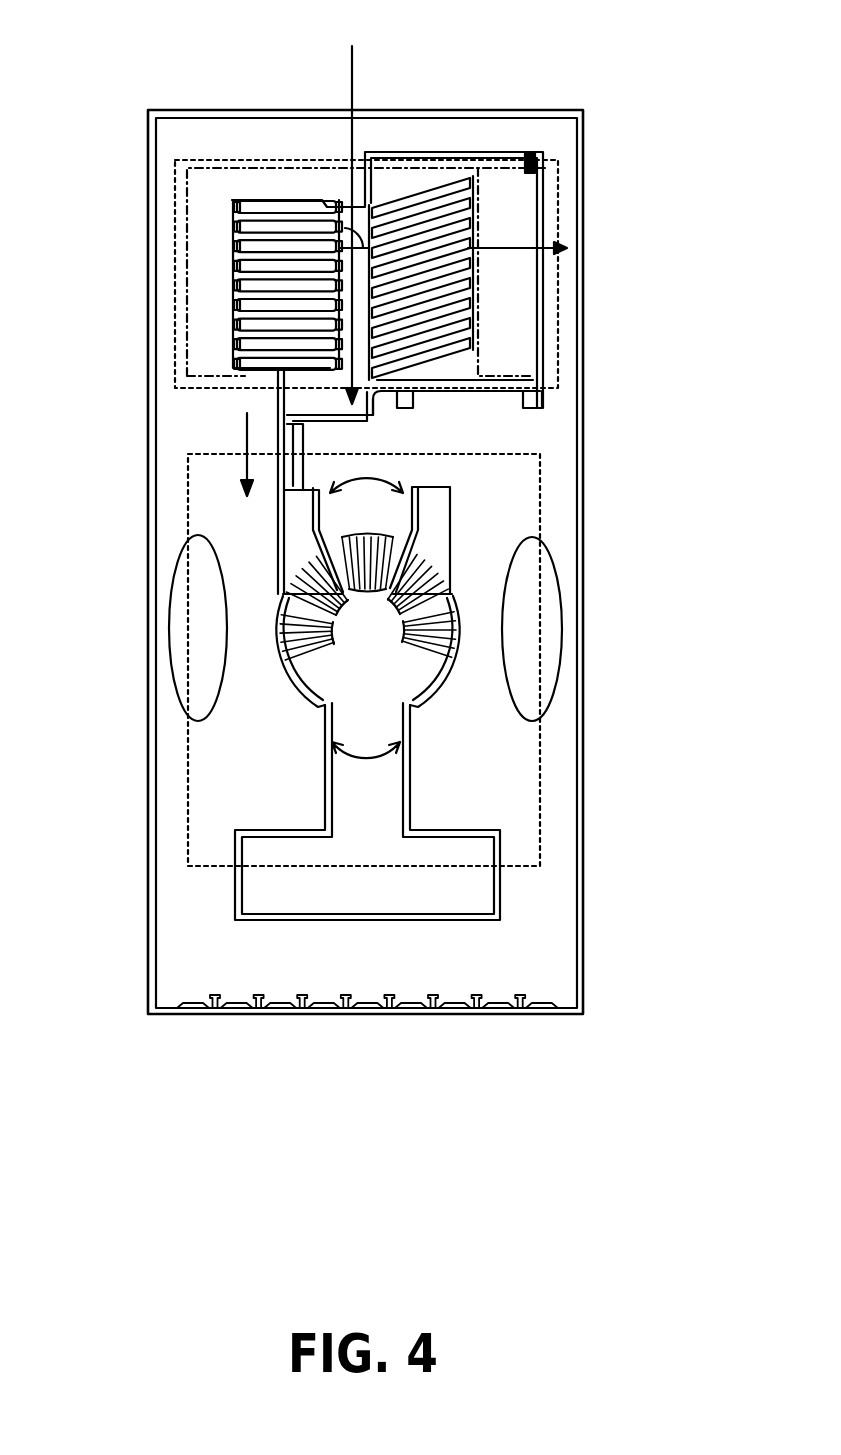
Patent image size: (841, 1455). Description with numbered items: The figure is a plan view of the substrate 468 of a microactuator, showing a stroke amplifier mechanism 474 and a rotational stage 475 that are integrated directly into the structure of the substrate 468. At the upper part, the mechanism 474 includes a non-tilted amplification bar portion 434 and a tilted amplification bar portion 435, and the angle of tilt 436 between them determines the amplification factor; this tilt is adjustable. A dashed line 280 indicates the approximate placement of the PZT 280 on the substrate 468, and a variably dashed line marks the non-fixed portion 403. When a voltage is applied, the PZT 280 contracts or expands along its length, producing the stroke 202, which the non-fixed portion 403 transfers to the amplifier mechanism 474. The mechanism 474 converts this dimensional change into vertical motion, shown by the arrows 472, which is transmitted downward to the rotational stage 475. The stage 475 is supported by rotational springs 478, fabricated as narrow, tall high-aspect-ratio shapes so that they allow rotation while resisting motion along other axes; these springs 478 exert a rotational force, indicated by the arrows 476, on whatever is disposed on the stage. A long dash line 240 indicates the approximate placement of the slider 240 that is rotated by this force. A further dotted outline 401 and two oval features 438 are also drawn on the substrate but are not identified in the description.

The first compartment (dotted outline) 401 is at (205, 165).
The non-tilted amplification bar portion 434 is at (263, 247).
The stroke amplifier mechanism 474 is at (341, 212).
The angle of tilt 436 is at (354, 212).
The tilted amplification bar portion 435 is at (419, 215).
The substrate 468 is at (473, 128).
The non-fixed portion 403 is at (523, 149).
The PZT 280 is at (556, 185).
The stroke 202 is at (523, 247).
The vertical motion arrows 472 is at (247, 442).
The rotational force arrows 476 is at (353, 757).
The slider 240 is at (540, 512).
The rotational springs 478 is at (452, 622).
The air openings 438 is at (520, 653).
The rotational stage 475 is at (383, 880).